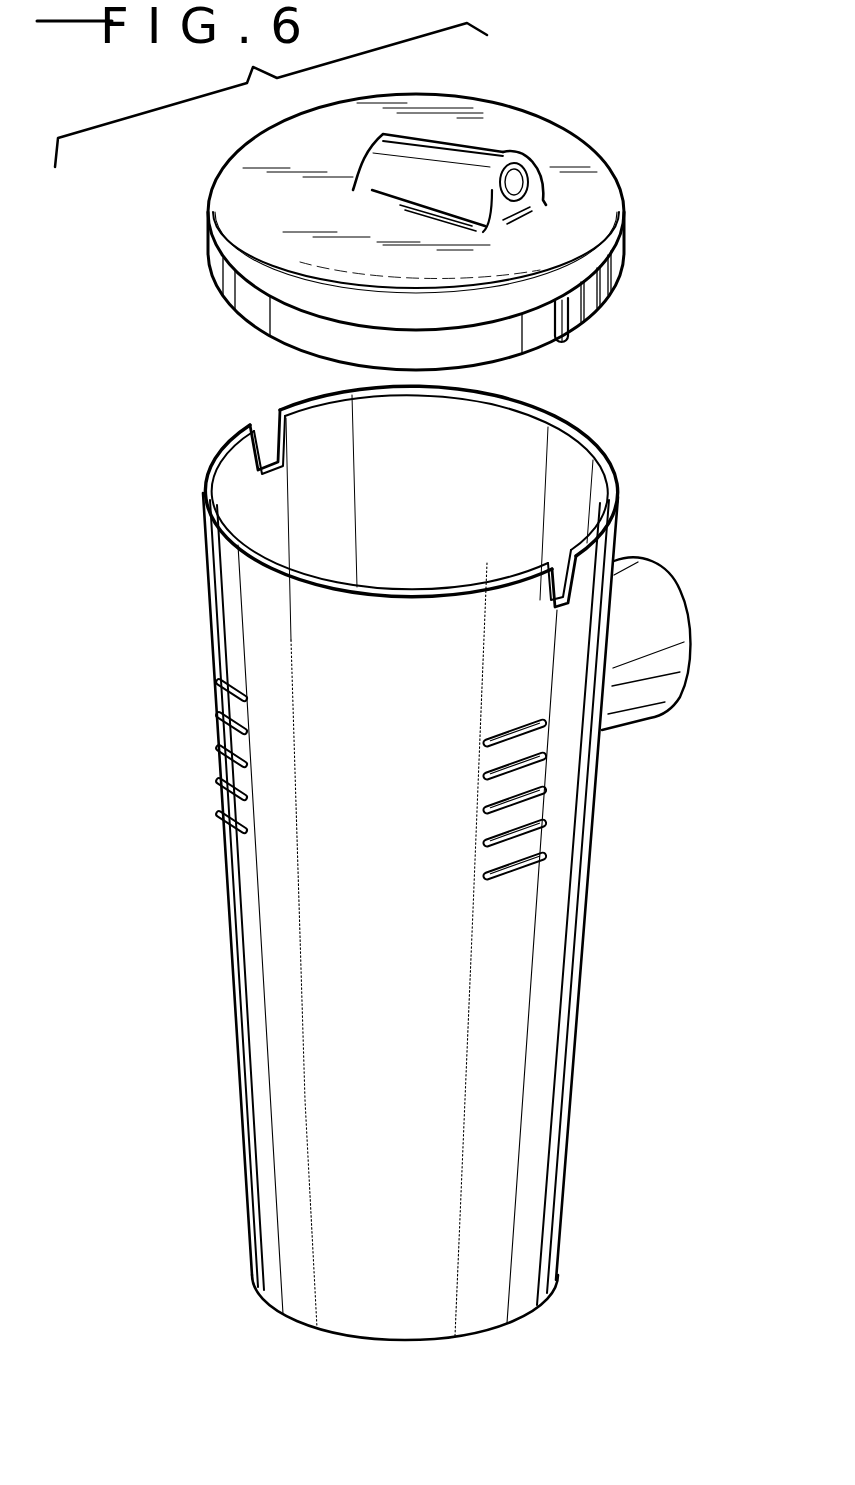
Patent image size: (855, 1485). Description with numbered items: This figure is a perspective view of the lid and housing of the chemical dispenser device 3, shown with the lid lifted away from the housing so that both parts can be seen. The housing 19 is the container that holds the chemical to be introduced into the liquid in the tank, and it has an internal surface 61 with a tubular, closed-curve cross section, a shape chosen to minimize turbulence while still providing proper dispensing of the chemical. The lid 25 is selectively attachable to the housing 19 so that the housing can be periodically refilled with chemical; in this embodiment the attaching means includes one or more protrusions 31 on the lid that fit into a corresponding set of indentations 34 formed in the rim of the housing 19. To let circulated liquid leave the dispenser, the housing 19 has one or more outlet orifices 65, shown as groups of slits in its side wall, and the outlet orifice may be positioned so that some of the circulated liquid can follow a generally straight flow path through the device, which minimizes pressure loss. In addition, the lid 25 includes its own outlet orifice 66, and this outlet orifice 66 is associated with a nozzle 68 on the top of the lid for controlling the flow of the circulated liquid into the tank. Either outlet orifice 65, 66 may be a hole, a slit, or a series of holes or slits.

The device 3 is at (163, 759).
The housing 19 is at (233, 1002).
The lid 25 is at (228, 250).
The protrusion 31 is at (571, 330).
The indentation 34 is at (293, 434).
The internal surface 61 is at (310, 522).
The outlet orifice 65 is at (248, 698).
The outlet orifice 66 is at (520, 182).
The nozzle 68 is at (503, 150).